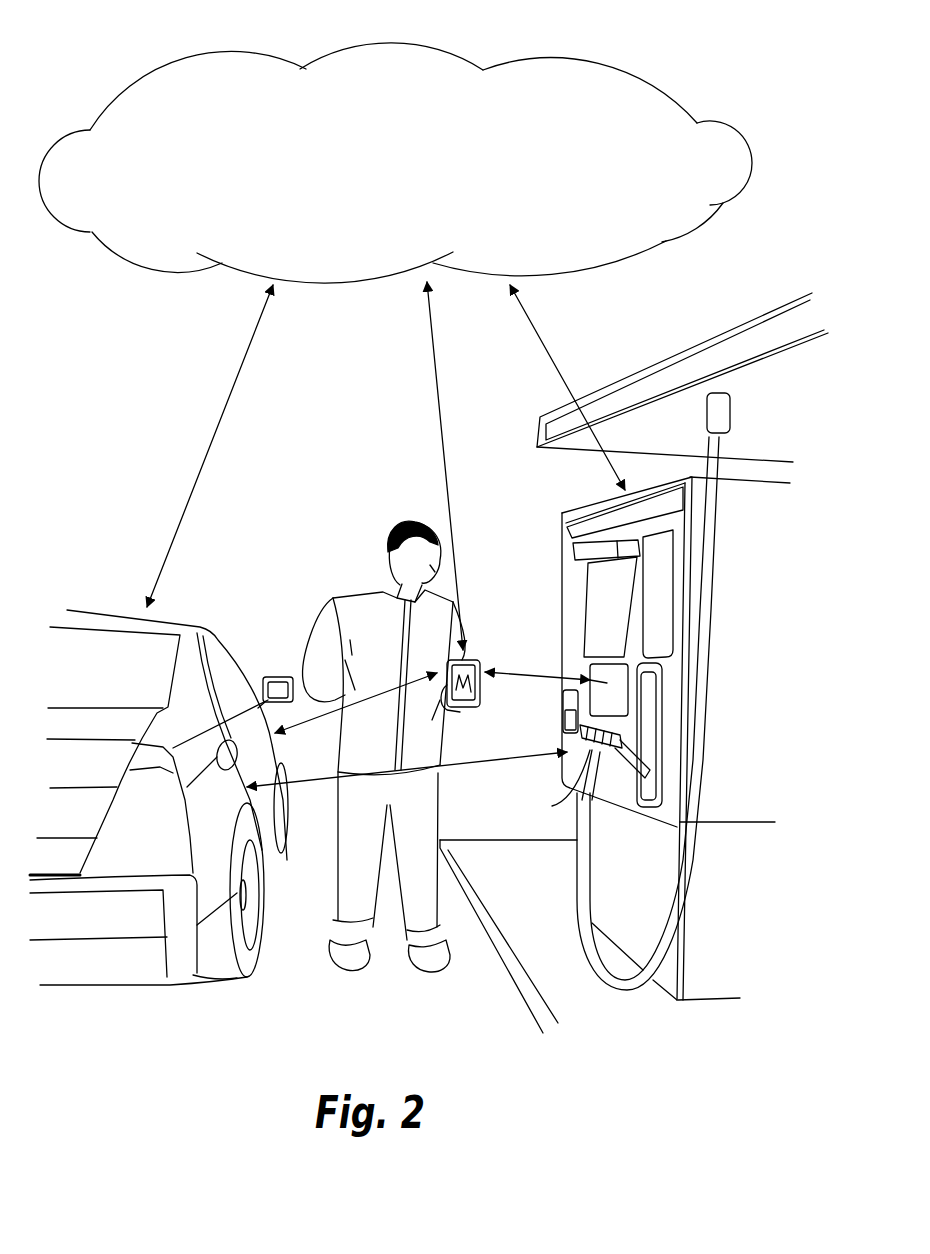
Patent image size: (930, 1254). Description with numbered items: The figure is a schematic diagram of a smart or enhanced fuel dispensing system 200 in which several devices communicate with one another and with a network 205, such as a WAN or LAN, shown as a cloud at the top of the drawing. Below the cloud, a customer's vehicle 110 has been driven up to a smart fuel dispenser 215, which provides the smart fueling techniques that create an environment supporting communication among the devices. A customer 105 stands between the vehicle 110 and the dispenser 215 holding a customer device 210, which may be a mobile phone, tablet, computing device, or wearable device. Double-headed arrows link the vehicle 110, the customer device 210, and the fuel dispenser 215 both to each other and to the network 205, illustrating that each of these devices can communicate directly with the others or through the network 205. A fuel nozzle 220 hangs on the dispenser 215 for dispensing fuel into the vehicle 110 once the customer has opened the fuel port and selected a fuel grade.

The enhanced fuel dispensing system 200 is at (80, 58).
The network 205 is at (163, 282).
The vehicle 110 is at (200, 610).
The user 105 is at (345, 607).
The customer device 210 is at (482, 653).
The smart fuel dispenser 215 is at (552, 550).
The fuel nozzle 220 is at (585, 745).